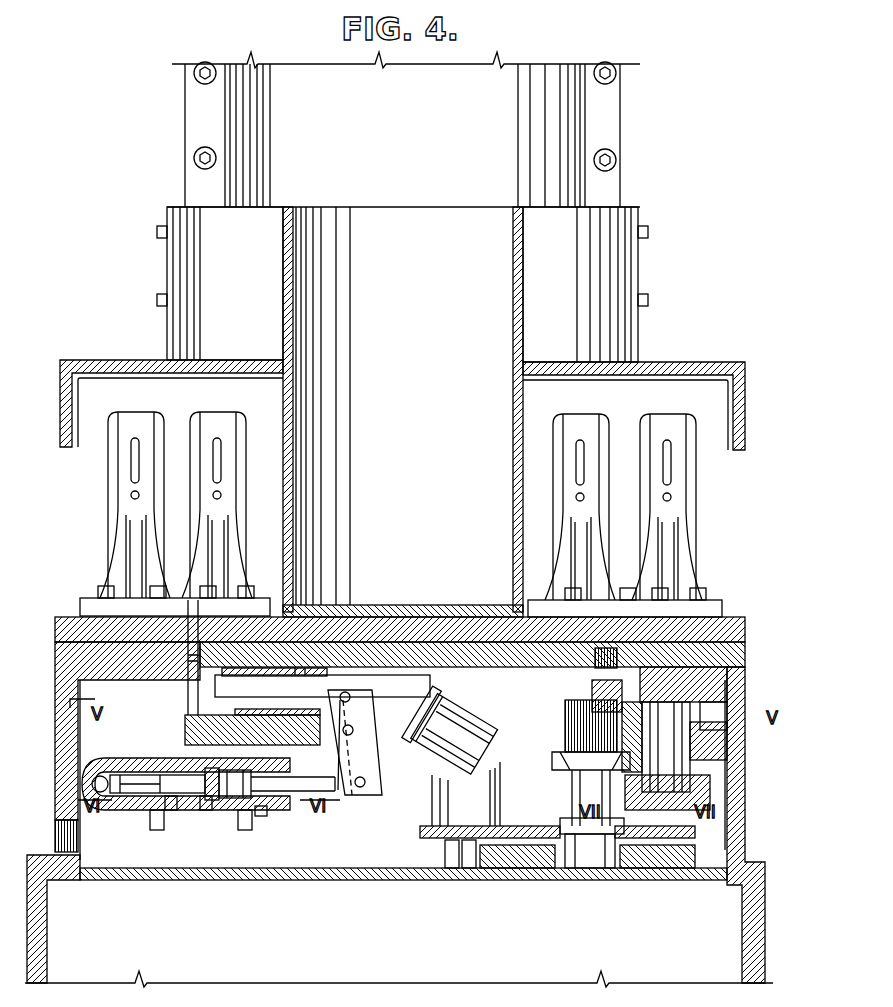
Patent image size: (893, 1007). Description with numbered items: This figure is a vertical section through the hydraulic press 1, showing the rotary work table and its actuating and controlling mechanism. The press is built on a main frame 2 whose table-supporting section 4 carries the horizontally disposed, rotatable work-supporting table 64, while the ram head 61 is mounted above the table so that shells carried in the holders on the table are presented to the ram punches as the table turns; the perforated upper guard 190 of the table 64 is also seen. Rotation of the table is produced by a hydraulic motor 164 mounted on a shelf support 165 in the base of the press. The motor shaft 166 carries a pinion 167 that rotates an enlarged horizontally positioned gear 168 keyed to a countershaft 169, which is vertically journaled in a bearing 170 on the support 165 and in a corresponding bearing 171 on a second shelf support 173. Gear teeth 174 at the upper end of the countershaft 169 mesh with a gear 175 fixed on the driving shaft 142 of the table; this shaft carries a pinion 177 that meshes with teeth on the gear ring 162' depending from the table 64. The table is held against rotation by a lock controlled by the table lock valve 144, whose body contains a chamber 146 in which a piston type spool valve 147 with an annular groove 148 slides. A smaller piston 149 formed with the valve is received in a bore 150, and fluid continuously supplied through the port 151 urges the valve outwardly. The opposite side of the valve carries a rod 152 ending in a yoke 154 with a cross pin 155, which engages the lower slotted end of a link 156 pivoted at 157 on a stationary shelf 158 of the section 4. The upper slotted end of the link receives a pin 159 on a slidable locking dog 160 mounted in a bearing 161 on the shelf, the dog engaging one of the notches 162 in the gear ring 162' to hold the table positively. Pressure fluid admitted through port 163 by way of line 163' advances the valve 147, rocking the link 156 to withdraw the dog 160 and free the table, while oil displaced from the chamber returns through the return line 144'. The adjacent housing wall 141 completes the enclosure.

The hydraulic press 1 is at (138, 167).
The main frame 2 is at (48, 900).
The table-supporting section 4 is at (54, 746).
The ram head 61 is at (565, 120).
The work-supporting table 64 is at (745, 628).
The housing wall 141 is at (700, 800).
The driving shaft 142 is at (672, 770).
The table lock valve 144 is at (186, 799).
The return line 144' is at (132, 836).
The chamber 146 is at (205, 772).
The spool valve 147 is at (206, 812).
The annular groove 148 is at (235, 782).
The piston 149 is at (171, 810).
The bore 150 is at (132, 775).
The fluid-admitting port 151 is at (99, 783).
The rod 152 is at (285, 778).
The yoke 154 is at (340, 792).
The cross pin 155 is at (364, 786).
The link 156 is at (356, 752).
The pivot 157 is at (353, 730).
The stationary shelf 158 is at (205, 728).
The pin 159 is at (350, 697).
The locking dog 160 is at (322, 685).
The bearing 161 is at (300, 690).
The notches 162 is at (166, 657).
The gear ring 162' is at (572, 680).
The port 163 is at (267, 825).
The line 163' is at (279, 834).
The hydraulic motor 164 is at (490, 754).
The shelf support 165 is at (440, 838).
The motor shaft 166 is at (466, 860).
The pinion 167 is at (450, 862).
The gear 168 is at (517, 870).
The countershaft 169 is at (587, 862).
The bearing 170 is at (562, 822).
The bearing 171 is at (552, 768).
The second shelf support 173 is at (720, 757).
The gear teeth 174 is at (566, 726).
The gear 175 is at (763, 692).
The pinion 177 is at (705, 690).
The perforated upper guard 190 is at (712, 370).